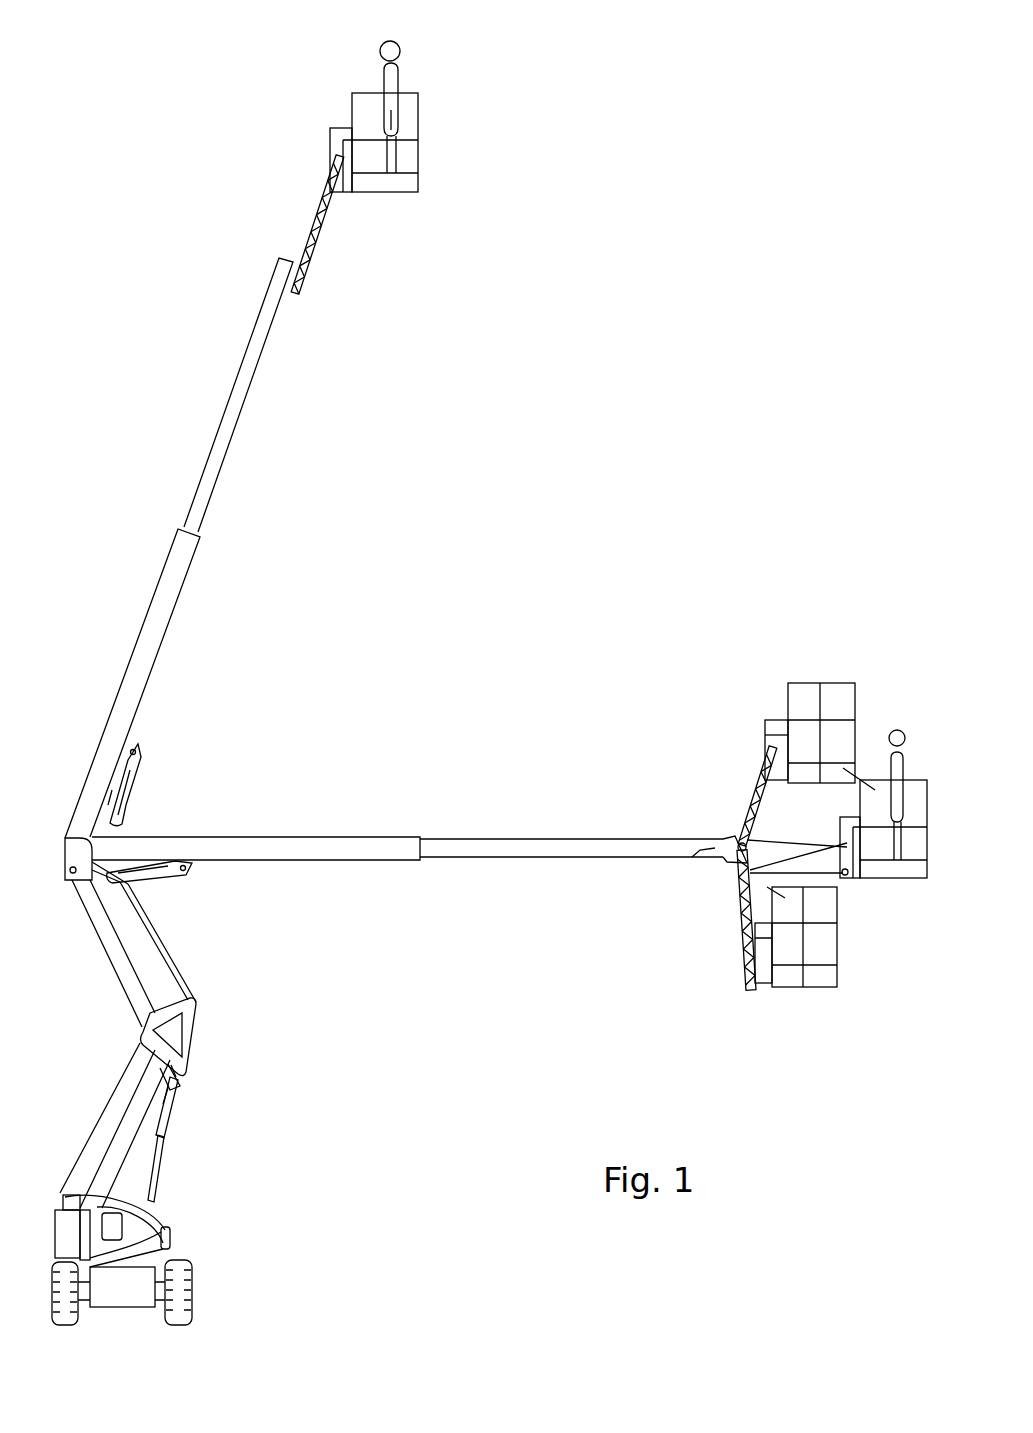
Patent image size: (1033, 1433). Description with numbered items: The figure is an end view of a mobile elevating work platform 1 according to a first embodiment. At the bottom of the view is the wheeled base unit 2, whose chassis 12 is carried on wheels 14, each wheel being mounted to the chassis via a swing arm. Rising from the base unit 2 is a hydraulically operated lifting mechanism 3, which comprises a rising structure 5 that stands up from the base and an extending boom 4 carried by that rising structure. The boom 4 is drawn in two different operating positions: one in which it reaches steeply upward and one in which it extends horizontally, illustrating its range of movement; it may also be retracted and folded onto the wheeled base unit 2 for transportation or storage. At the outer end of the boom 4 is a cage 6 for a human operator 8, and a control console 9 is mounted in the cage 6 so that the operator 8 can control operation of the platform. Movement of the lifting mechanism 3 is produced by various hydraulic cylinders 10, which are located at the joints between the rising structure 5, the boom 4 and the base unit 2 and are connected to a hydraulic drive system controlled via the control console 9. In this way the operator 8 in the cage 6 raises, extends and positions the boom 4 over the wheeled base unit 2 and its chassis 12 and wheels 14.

The mobile elevating work platform 1 is at (631, 356).
The wheeled base unit 2 is at (138, 1277).
The hydraulically operated lifting mechanism 3 is at (414, 695).
The extending boom 4 is at (219, 443).
The rising structure 5 is at (185, 1059).
The cage 6 is at (407, 185).
The human operator 8 is at (382, 67).
The control console 9 is at (367, 103).
The hydraulic cylinders 10 is at (128, 777).
The chassis 12 is at (123, 1298).
The wheels 14 is at (185, 1285).